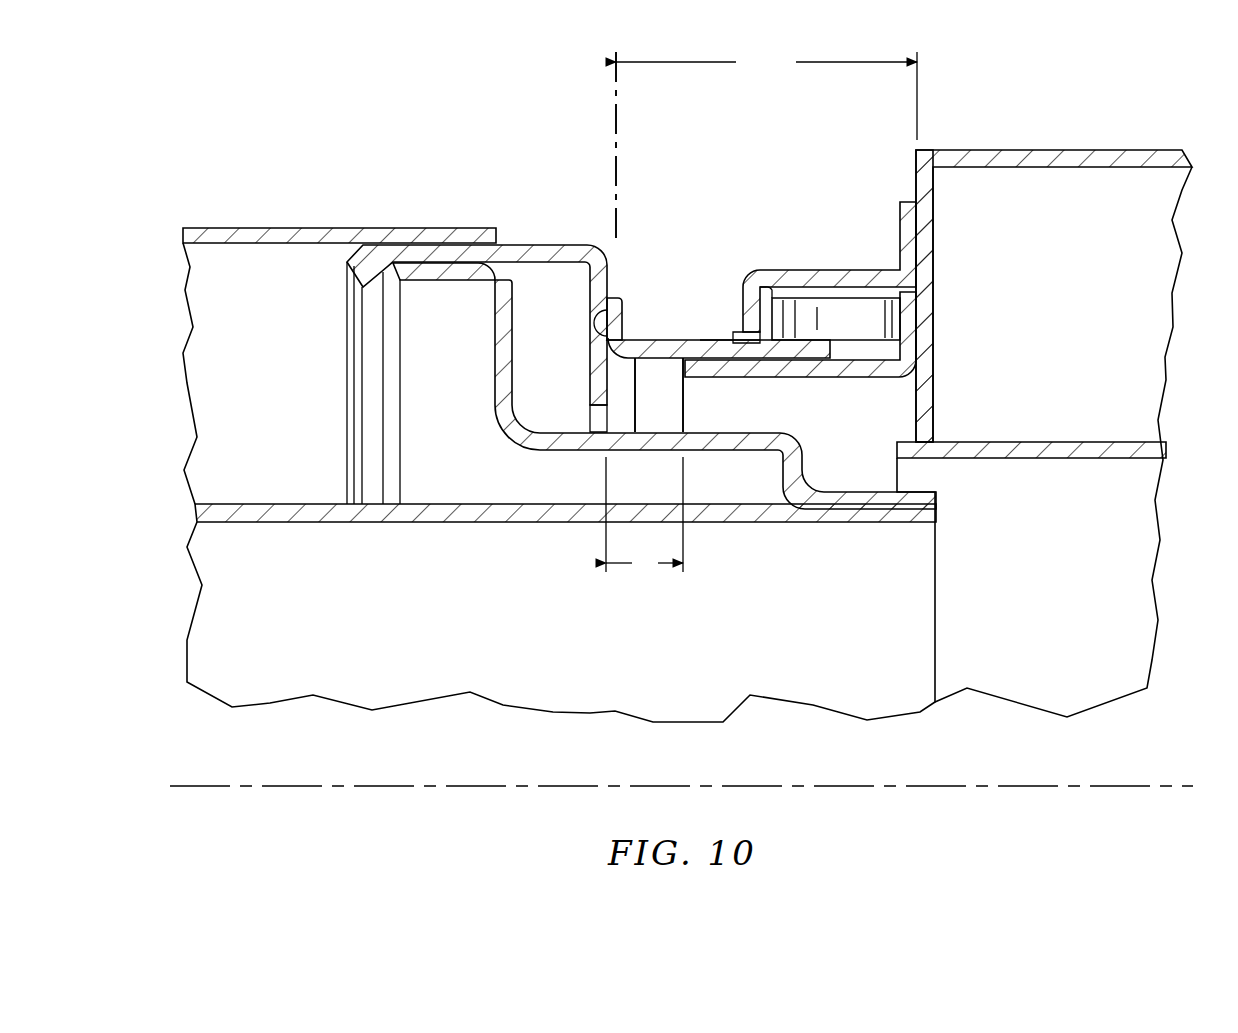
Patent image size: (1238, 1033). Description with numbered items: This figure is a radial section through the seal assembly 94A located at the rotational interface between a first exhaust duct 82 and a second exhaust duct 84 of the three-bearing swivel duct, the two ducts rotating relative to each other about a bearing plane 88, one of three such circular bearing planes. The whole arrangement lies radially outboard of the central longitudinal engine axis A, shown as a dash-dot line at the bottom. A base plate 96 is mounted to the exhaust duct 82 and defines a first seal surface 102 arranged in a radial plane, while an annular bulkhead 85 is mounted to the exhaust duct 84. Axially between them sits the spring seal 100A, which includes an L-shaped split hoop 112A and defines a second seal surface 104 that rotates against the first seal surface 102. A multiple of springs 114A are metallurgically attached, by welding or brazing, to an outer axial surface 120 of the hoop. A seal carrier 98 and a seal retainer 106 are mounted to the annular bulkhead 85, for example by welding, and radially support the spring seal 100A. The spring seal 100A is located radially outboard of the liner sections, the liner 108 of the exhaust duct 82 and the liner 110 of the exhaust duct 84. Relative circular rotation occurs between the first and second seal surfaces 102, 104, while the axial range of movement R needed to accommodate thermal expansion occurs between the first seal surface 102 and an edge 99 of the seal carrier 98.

The exhaust duct 82 is at (355, 201).
The exhaust duct 84 is at (1057, 132).
The annular bulkhead 85 is at (923, 150).
The bearing plane 88 is at (616, 85).
The seal assembly 94A is at (766, 94).
The base plate 96 is at (542, 245).
The seal carrier 98 is at (813, 376).
The edge 99 is at (686, 400).
The spring seal 100A is at (663, 333).
The first seal surface 102 is at (621, 257).
The second seal surface 104 is at (626, 300).
The seal retainer 106 is at (825, 277).
The liner 108 is at (792, 525).
The liner 110 is at (1047, 458).
The L-shaped split hoop 112A is at (662, 372).
The springs 114A is at (848, 312).
The outer axial surface 120 is at (703, 338).
The axial range of movement R is at (644, 518).
The central longitudinal engine axis A is at (1183, 786).